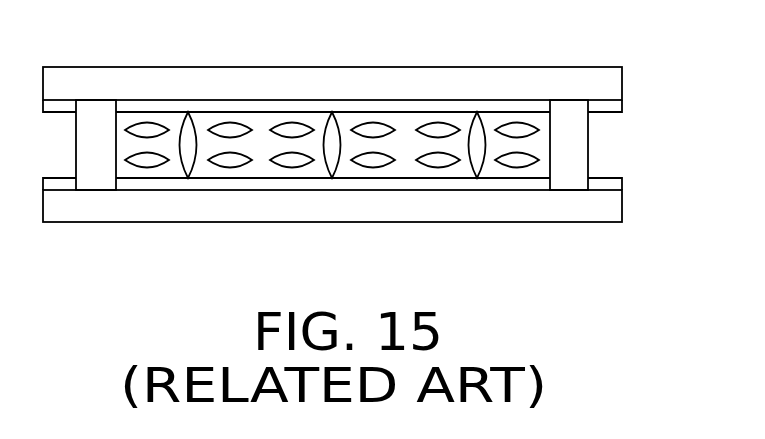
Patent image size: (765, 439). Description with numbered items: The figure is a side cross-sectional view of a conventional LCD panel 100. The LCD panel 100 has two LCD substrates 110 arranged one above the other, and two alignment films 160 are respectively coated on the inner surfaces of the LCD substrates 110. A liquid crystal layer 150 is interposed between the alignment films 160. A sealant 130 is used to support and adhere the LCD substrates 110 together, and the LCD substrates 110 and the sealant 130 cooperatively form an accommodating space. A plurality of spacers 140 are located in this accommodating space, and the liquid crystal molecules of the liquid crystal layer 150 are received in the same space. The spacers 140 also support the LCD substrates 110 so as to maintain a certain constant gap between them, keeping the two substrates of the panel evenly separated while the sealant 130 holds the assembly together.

The LCD panel 100 is at (368, 145).
The LCD substrate 110 is at (602, 81).
The sealant 130 is at (398, 204).
The spacer 140 is at (330, 142).
The liquid crystal layer 150 is at (440, 175).
The alignment film 160 is at (605, 103).